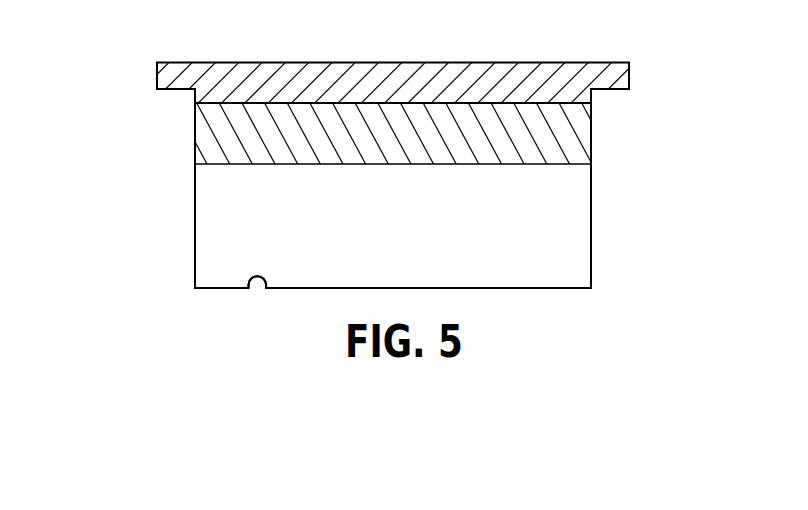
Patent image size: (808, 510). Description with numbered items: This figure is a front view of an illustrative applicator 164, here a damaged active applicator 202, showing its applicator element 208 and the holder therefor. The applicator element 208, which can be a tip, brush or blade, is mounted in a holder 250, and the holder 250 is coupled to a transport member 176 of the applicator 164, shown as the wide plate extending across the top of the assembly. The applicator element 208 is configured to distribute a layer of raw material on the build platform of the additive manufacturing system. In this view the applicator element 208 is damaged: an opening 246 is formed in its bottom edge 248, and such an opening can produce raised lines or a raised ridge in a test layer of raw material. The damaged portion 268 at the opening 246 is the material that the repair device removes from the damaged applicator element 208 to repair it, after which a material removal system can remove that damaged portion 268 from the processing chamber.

The applicator 164 is at (444, 179).
The damaged active applicator 202 is at (658, 71).
The transport member 176 is at (415, 88).
The applicator element 208 is at (423, 213).
The holder 250 is at (560, 137).
The opening 246 is at (257, 276).
The bottom edge 248 is at (500, 289).
The damaged portion 268 is at (266, 313).